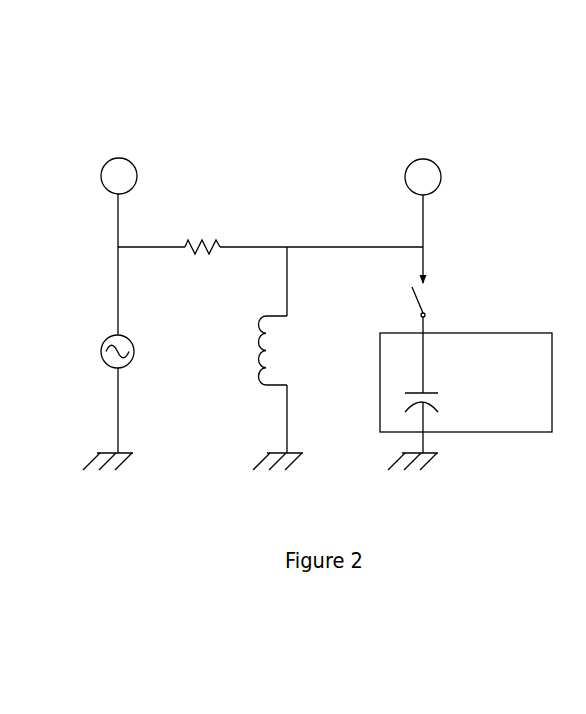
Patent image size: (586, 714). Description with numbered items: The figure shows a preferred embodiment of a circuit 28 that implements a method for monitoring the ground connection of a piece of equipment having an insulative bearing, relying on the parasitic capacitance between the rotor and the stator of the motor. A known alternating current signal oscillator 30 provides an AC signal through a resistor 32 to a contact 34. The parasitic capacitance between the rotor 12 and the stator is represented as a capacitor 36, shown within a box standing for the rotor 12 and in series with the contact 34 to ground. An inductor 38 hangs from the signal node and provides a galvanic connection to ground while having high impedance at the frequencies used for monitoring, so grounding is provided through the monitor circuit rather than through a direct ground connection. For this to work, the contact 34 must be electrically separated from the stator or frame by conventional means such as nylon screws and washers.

The circuit 28 is at (248, 118).
The alternating current signal oscillator 30 is at (101, 343).
The resistor 32 is at (221, 247).
The contact 34 is at (425, 295).
The capacitor 36 is at (440, 398).
The inductor 38 is at (285, 368).
The rotor 12 is at (512, 333).